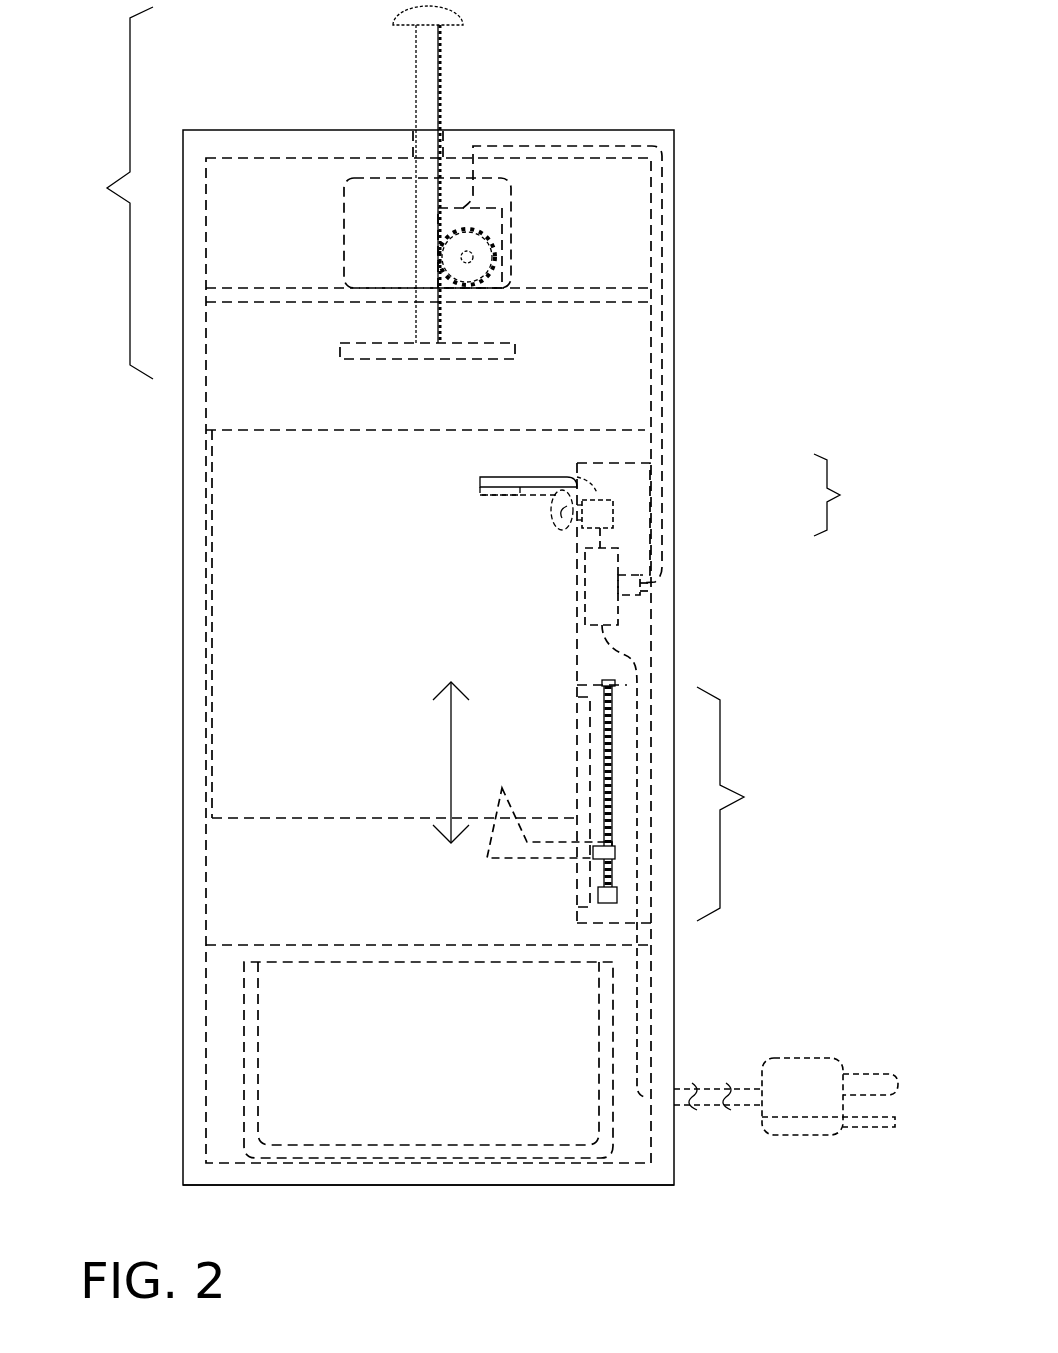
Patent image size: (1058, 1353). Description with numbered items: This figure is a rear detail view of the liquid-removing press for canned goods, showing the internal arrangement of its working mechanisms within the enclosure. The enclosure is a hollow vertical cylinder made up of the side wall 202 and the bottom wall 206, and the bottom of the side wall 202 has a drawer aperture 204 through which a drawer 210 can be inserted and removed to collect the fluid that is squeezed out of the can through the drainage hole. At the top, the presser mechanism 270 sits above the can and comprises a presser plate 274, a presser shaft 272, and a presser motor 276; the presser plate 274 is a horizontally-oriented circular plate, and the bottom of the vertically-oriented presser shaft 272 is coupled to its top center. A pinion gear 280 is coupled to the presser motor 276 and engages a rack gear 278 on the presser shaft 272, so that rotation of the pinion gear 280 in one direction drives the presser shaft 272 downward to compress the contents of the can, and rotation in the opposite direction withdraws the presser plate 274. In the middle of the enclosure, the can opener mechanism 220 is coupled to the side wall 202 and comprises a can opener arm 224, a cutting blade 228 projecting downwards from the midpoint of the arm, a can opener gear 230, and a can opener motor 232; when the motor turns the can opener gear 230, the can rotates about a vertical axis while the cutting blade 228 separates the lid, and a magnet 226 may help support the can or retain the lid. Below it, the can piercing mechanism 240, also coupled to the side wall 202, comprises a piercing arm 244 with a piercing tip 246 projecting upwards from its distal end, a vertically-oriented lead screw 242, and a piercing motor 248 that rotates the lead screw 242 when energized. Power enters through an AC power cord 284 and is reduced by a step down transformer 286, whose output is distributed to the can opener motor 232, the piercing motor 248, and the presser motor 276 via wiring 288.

The side wall 202 is at (183, 738).
The drawer aperture 204 is at (244, 1056).
The bottom wall 206 is at (412, 1185).
The drawer 210 is at (257, 993).
The can opener mechanism 220 is at (748, 688).
The can opener arm 224 is at (520, 477).
The magnet 226 is at (493, 488).
The cutting blade 228 is at (550, 493).
The can opener gear 230 is at (565, 535).
The can opener motor 232 is at (613, 515).
The can piercing mechanism 240 is at (701, 804).
The lead screw 242 is at (605, 737).
The piercing arm 244 is at (542, 858).
The piercing tip 246 is at (502, 802).
The piercing motor 248 is at (608, 903).
The presser mechanism 270 is at (93, 193).
The presser shaft 272 is at (417, 53).
The presser plate 274 is at (515, 348).
The presser motor 276 is at (497, 223).
The rack gear 278 is at (440, 77).
The pinion gear 280 is at (493, 253).
The AC power cord 284 is at (763, 1117).
The step down transformer 286 is at (618, 605).
The wiring 288 is at (663, 398).